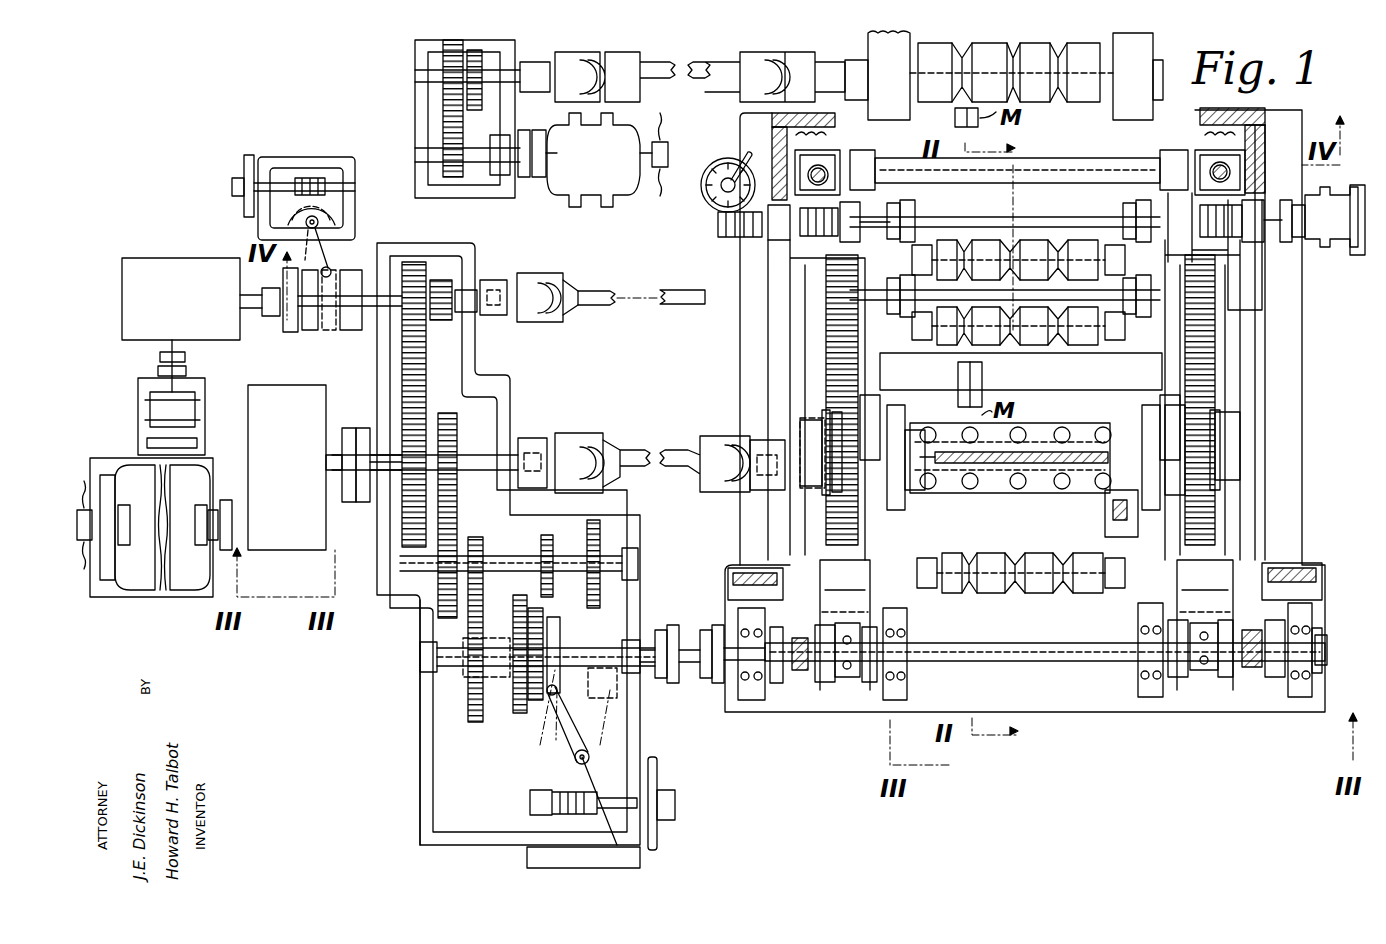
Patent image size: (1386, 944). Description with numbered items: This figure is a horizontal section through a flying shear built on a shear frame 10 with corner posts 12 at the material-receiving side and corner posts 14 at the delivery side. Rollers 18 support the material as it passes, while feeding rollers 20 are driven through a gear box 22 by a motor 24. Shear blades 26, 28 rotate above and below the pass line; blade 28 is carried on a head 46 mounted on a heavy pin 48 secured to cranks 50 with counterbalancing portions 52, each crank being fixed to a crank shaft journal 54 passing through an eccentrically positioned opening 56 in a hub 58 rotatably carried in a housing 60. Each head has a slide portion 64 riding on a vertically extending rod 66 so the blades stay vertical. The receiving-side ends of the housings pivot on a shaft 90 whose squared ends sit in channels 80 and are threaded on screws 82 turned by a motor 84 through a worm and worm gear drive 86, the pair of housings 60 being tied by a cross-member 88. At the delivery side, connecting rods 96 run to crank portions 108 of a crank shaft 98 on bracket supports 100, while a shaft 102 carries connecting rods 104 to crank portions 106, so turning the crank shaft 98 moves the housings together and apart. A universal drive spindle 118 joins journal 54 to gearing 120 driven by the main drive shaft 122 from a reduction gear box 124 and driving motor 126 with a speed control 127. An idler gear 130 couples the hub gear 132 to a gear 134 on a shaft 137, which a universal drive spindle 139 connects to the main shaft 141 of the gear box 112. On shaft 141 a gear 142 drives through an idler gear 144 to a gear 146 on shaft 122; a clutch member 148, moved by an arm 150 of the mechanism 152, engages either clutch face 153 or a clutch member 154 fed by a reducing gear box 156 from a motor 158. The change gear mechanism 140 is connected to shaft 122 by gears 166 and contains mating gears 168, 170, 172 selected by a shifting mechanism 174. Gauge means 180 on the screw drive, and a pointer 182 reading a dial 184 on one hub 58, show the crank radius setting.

The shear frame 10 is at (1067, 712).
The corner posts 12 is at (1250, 108).
The corner posts 14 is at (1300, 578).
The rollers 18 is at (1085, 265).
The material-feeding rollers 20 is at (1085, 75).
The gear box 22 is at (420, 60).
The motor 24 is at (585, 160).
The shear blade 26 is at (1002, 462).
The shear blade 28 is at (1030, 452).
The head 46 is at (1072, 452).
The heavy pin 48 is at (935, 495).
The cranks 50 is at (897, 435).
The counterbalancing portions 52 is at (1168, 410).
The crank shaft journal 54 is at (805, 485).
The eccentrically positioned opening 56 is at (815, 395).
The hub 58 is at (830, 400).
The housing 60 is at (878, 560).
The slide portion 64 is at (1130, 515).
The vertically extending rod 66 is at (1113, 510).
The channels 80 is at (1205, 135).
The screws 82 is at (808, 172).
The motor 84 is at (1330, 228).
The worm and worm gear drive 86 is at (815, 150).
The cross-member 88 is at (1021, 380).
The shaft 90 is at (1075, 172).
The connecting rods 96 is at (780, 690).
The crank shaft 98 is at (1318, 650).
The bracket supports 100 is at (1300, 697).
The shaft 102 is at (1025, 650).
The connecting rods 104 is at (828, 682).
The crank portions 106 is at (870, 690).
The crank portions 108 is at (778, 700).
The gear box 112 is at (420, 688).
The universal drive spindle 118 is at (648, 452).
The gearing 120 is at (508, 544).
The main drive shaft 122 is at (385, 470).
The reduction gear box 124 is at (287, 467).
The driving motor 126 is at (180, 570).
The speed control 127 is at (85, 508).
The idler gear 130 is at (828, 325).
The gear 132 is at (835, 510).
The gear 134 is at (835, 262).
The shaft 137 is at (935, 295).
The universal drive spindle 139 is at (665, 305).
The change gear mechanism 140 is at (527, 601).
The main shaft 141 is at (290, 332).
The gear 142 is at (408, 262).
The idler gear 144 is at (445, 318).
The gear 146 is at (420, 395).
The clutch member 148 is at (310, 330).
The arm 150 is at (330, 262).
The clutch shifting mechanism 152 is at (292, 157).
The clutch face 153 is at (362, 330).
The clutch member 154 is at (268, 316).
The reducing gear box 156 is at (181, 299).
The motor 158 is at (158, 400).
The gears 166 is at (455, 535).
The mating gears 168 is at (483, 620).
The mating gears 170 is at (555, 575).
The mating gears 172 is at (598, 608).
The shifting mechanism 174 is at (565, 745).
The gauge means 180 is at (720, 168).
The pointer 182 is at (690, 455).
The dial 184 is at (832, 425).